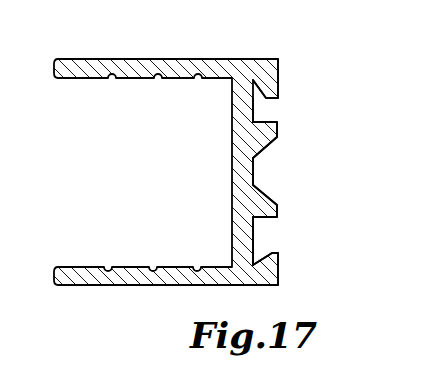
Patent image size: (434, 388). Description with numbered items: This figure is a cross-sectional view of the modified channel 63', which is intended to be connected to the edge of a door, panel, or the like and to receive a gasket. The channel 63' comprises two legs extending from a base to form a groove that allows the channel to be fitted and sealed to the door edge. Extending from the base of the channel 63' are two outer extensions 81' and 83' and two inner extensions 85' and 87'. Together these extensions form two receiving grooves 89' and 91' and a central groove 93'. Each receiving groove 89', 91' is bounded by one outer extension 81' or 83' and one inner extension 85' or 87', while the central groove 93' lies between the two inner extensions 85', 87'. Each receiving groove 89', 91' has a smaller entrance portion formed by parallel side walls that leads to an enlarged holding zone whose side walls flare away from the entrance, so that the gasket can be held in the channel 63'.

The modified channel 63' is at (217, 150).
The outer extension 81' is at (307, 78).
The outer extension 83' is at (307, 269).
The inner extension 85' is at (307, 140).
The inner extension 87' is at (307, 203).
The receiving groove 89' is at (307, 109).
The receiving groove 91' is at (307, 241).
The central groove 93' is at (307, 171).